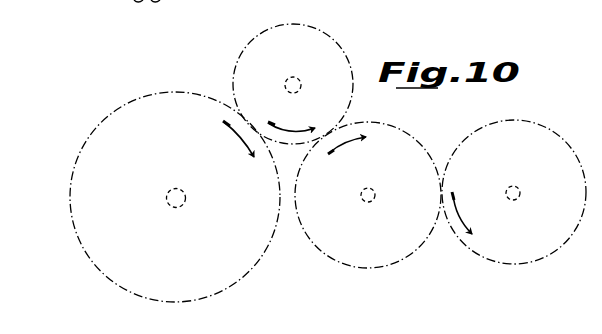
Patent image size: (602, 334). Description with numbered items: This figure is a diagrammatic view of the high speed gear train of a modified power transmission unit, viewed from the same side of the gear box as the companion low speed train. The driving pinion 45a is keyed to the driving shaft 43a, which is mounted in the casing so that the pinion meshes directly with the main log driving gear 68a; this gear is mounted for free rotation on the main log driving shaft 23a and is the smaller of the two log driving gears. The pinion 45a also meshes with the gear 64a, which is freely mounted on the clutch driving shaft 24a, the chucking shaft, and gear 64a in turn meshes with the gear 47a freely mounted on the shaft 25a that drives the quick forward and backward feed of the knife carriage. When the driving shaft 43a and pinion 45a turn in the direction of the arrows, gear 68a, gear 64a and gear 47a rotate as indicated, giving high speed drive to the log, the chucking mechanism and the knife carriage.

The main log driving gear 68a is at (164, 93).
The main log driving shaft 23a is at (170, 195).
The driving pinion 45a is at (294, 24).
The driving shaft 43a is at (287, 81).
The gear 64a is at (358, 272).
The clutch driving shaft 24a is at (369, 205).
The gear 47a is at (512, 263).
The shaft 25a is at (509, 188).